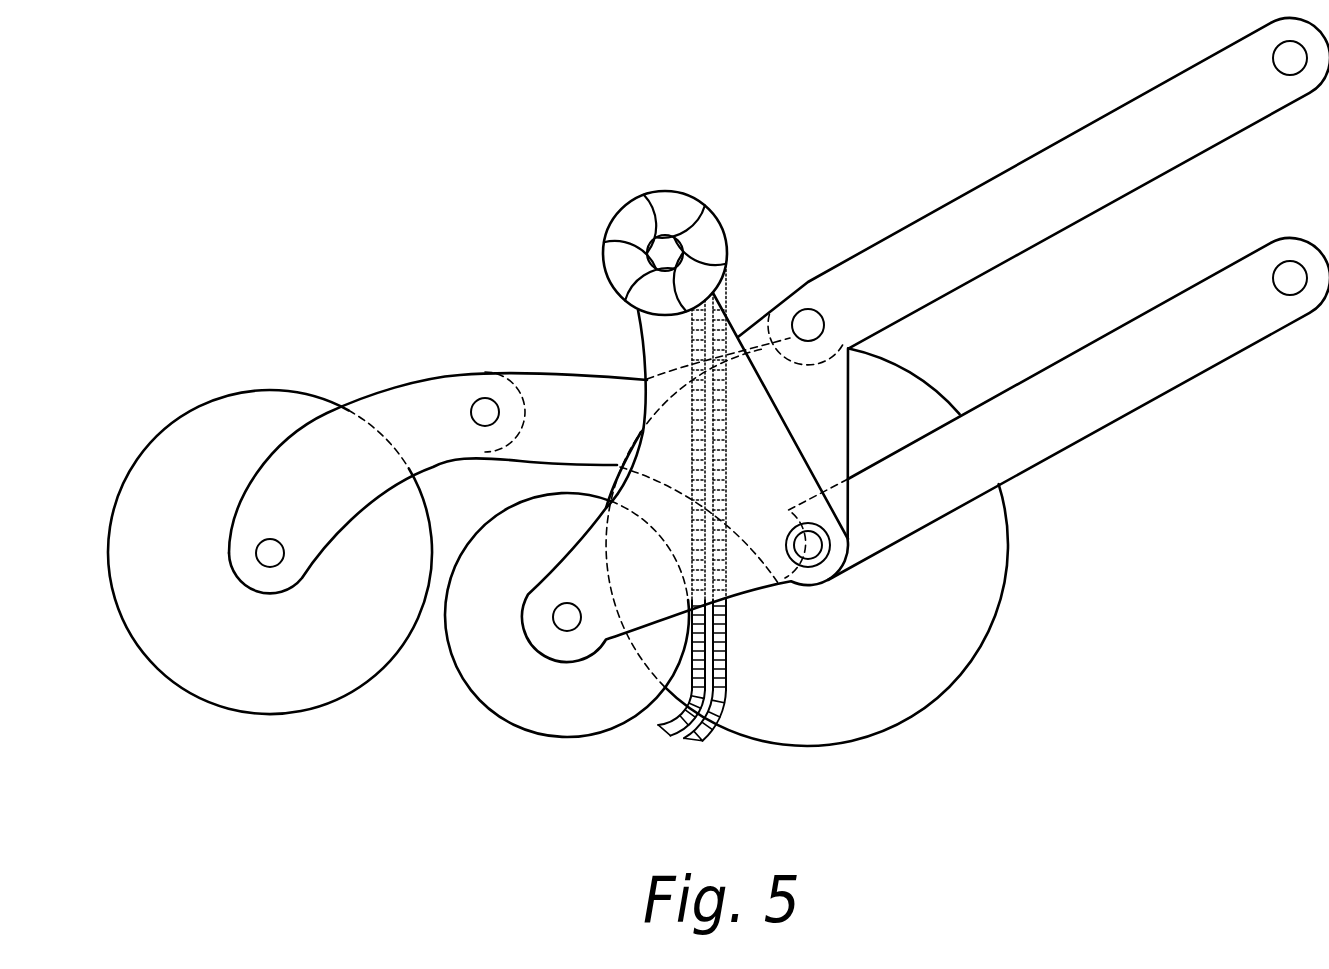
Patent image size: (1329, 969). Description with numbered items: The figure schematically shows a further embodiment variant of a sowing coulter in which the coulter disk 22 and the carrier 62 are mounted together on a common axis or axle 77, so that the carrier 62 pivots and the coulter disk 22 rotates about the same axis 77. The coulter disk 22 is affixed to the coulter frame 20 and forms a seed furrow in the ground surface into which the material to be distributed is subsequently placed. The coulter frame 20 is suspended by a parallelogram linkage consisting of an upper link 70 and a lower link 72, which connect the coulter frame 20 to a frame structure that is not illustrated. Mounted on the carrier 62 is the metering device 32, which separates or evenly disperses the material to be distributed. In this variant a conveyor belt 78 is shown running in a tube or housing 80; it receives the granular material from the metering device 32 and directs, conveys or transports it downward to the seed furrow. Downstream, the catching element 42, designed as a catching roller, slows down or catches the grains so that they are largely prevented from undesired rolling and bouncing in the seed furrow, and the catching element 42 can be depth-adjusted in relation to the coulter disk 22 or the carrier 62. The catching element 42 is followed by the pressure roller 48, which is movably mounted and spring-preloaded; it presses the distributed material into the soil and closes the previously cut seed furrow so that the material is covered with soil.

The coulter frame 20 is at (552, 377).
The coulter disk 22 is at (969, 605).
The metering device 32 is at (612, 213).
The catching element 42 is at (562, 713).
The pressure roller 48 is at (214, 653).
The carrier 62 is at (648, 342).
The upper link 70 is at (945, 206).
The lower link 72 is at (1160, 395).
The common axle 77 is at (808, 550).
The conveyor belt 78 is at (698, 738).
The housing 80 is at (727, 670).